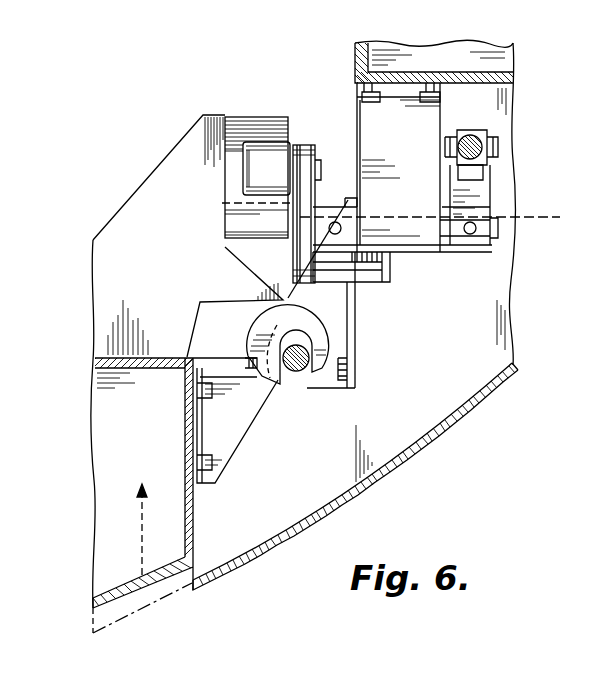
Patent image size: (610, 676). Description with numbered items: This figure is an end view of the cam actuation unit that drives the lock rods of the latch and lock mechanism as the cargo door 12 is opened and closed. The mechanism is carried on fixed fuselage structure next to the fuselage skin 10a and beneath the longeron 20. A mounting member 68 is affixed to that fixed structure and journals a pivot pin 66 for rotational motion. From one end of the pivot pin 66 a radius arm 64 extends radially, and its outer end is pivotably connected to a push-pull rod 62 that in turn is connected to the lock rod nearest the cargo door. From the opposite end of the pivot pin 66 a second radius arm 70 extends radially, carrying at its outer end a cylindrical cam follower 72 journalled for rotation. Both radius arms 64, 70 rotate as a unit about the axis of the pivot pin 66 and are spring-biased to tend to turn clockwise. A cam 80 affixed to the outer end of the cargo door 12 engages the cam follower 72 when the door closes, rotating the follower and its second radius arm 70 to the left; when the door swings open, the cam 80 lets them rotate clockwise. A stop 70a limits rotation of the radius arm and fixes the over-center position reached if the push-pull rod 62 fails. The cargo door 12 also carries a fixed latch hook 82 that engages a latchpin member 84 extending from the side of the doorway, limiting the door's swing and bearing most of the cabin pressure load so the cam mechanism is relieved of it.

The fuselage skin 10a is at (447, 425).
The cargo door 12 is at (90, 486).
The longeron 20 is at (452, 67).
The push-pull rod 62 is at (472, 134).
The radius arm 64 is at (480, 196).
The pivot pin 66 is at (498, 228).
The mounting member 68 is at (400, 138).
The second radius arm 70 is at (306, 147).
The stop 70a is at (392, 268).
The cam follower 72 is at (270, 147).
The cam 80 is at (224, 181).
The latch hook 82 is at (305, 338).
The latchpin member 84 is at (298, 372).